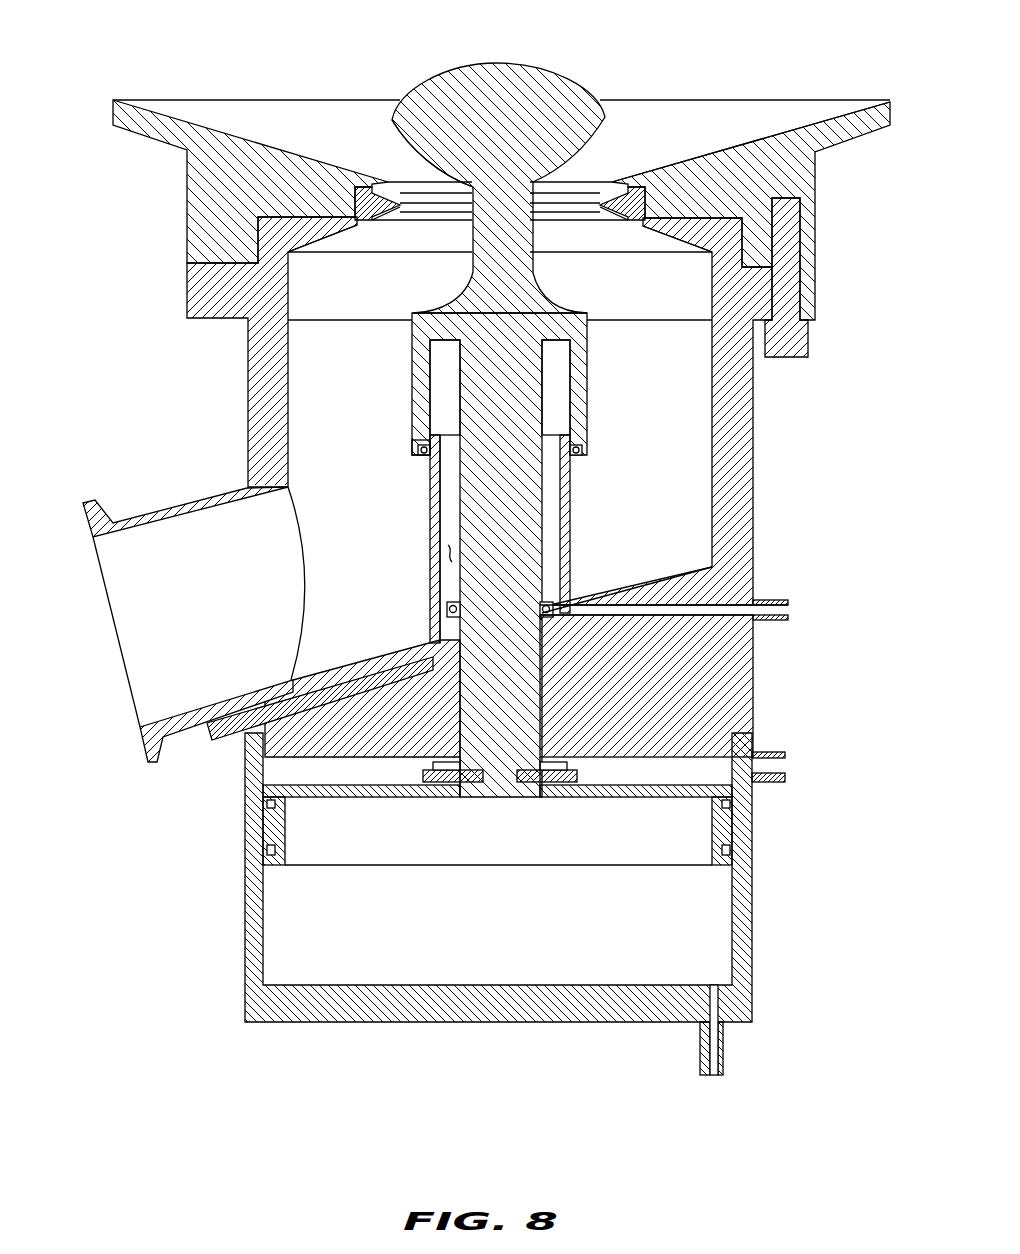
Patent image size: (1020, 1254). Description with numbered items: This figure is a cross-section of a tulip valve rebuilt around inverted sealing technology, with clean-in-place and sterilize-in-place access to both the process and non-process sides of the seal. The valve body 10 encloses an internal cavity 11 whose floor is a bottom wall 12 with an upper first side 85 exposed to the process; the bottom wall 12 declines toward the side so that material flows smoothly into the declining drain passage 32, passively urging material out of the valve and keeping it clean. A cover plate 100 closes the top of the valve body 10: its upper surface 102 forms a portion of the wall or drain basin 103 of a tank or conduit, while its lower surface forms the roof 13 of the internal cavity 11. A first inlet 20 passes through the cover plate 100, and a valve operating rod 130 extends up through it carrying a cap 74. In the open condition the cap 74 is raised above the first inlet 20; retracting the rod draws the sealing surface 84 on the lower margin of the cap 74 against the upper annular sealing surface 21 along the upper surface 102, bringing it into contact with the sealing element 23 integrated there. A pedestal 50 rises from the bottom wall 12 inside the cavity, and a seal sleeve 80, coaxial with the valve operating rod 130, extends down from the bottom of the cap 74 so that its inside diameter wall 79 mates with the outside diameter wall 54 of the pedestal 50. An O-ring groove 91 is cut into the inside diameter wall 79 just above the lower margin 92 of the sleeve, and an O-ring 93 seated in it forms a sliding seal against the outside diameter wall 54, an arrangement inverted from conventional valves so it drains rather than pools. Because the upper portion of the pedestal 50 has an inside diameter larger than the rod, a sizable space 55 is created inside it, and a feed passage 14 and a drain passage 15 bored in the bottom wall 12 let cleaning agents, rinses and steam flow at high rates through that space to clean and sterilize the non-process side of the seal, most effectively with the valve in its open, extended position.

The valve body 10 is at (743, 440).
The internal cavity 11 is at (669, 378).
The bottom wall 12 is at (657, 583).
The roof 13 is at (360, 230).
The feed passage 14 is at (695, 612).
The drain passage 15 is at (245, 757).
The first inlet 20 is at (386, 182).
The inlet annular sealing surface 21 is at (567, 180).
The sealing element 23 is at (587, 198).
The drain passage 32 is at (237, 618).
The pedestal 50 is at (567, 547).
The outside diameter wall 54 is at (433, 533).
The space 55 is at (450, 553).
The cap 74 is at (523, 95).
The inside diameter wall 79 is at (567, 382).
The seal sleeve 80 is at (415, 368).
The sealing surface 84 is at (383, 130).
The upper first side 85 is at (677, 570).
The O-ring groove 91 is at (415, 448).
The lower margin 92 is at (428, 445).
The O-ring 93 is at (582, 447).
The cover plate 100 is at (777, 178).
The upper surface 102 is at (253, 147).
The drain basin 103 is at (750, 135).
The valve operating rod 130 is at (510, 682).